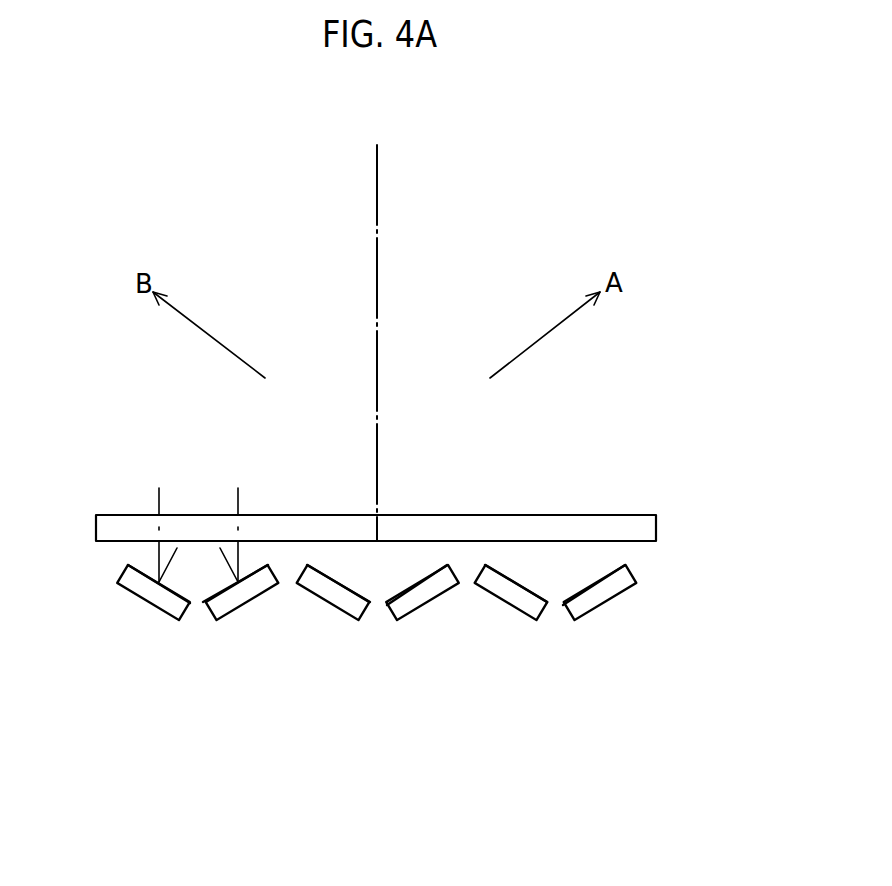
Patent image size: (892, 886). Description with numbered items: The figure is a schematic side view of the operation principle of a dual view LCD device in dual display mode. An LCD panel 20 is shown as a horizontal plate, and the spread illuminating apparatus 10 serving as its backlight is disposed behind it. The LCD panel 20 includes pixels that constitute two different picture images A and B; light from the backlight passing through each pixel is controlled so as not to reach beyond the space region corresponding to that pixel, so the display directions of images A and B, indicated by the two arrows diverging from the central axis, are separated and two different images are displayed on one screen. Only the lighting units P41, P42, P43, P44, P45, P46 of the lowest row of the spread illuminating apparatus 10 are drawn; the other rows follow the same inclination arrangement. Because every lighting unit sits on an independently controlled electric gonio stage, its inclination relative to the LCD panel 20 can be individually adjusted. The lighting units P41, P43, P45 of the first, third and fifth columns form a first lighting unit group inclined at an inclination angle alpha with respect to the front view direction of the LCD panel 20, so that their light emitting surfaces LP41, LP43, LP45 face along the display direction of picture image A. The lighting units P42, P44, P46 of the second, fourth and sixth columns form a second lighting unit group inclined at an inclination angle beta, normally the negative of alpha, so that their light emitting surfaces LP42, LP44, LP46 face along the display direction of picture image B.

The spread illuminating apparatus 10 is at (673, 597).
The LCD panel 20 is at (656, 528).
The lighting unit P41 is at (150, 590).
The lighting unit P42 is at (240, 590).
The lighting unit P43 is at (328, 590).
The lighting unit P44 is at (418, 590).
The lighting unit P45 is at (506, 590).
The lighting unit P46 is at (597, 590).
The light emitting surface LP41 is at (140, 571).
The light emitting surface LP42 is at (207, 596).
The light emitting surface LP43 is at (363, 594).
The light emitting surface LP44 is at (435, 572).
The light emitting surface LP45 is at (545, 594).
The light emitting surface LP46 is at (613, 572).
The inclination angle α alpha is at (171, 557).
The inclination angle β beta is at (221, 556).